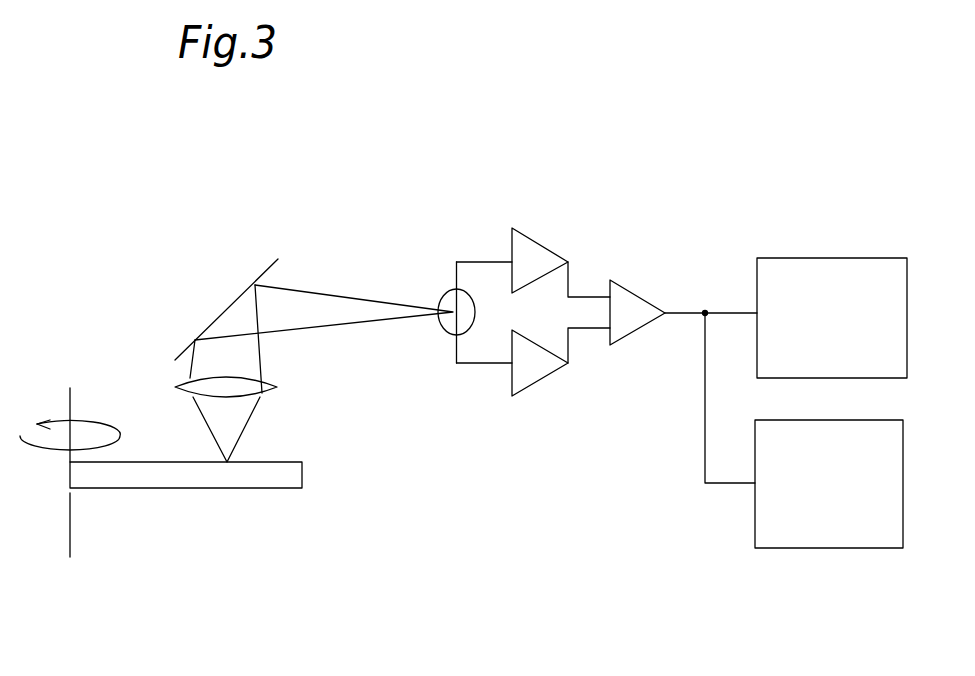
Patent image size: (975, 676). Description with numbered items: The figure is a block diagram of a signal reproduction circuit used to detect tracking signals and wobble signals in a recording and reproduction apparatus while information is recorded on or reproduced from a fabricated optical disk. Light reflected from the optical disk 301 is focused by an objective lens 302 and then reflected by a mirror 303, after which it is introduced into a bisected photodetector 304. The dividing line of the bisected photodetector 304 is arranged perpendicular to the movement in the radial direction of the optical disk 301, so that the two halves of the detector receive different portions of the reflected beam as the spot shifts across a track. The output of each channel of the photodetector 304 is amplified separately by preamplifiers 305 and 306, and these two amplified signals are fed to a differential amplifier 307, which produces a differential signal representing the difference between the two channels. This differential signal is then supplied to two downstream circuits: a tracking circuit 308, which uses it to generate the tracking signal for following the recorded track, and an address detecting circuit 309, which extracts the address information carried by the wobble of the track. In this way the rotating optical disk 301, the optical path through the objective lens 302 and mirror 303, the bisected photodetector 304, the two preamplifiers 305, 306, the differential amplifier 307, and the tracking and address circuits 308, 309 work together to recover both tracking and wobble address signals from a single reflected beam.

The optical disk 301 is at (158, 470).
The objective lens 302 is at (210, 390).
The mirror 303 is at (272, 266).
The bisected photodetector 304 is at (450, 290).
The preamplifier 305 is at (520, 372).
The preamplifier 306 is at (527, 257).
The differential amplifier 307 is at (620, 293).
The tracking circuit 308 is at (783, 273).
The address detecting circuit 309 is at (813, 533).